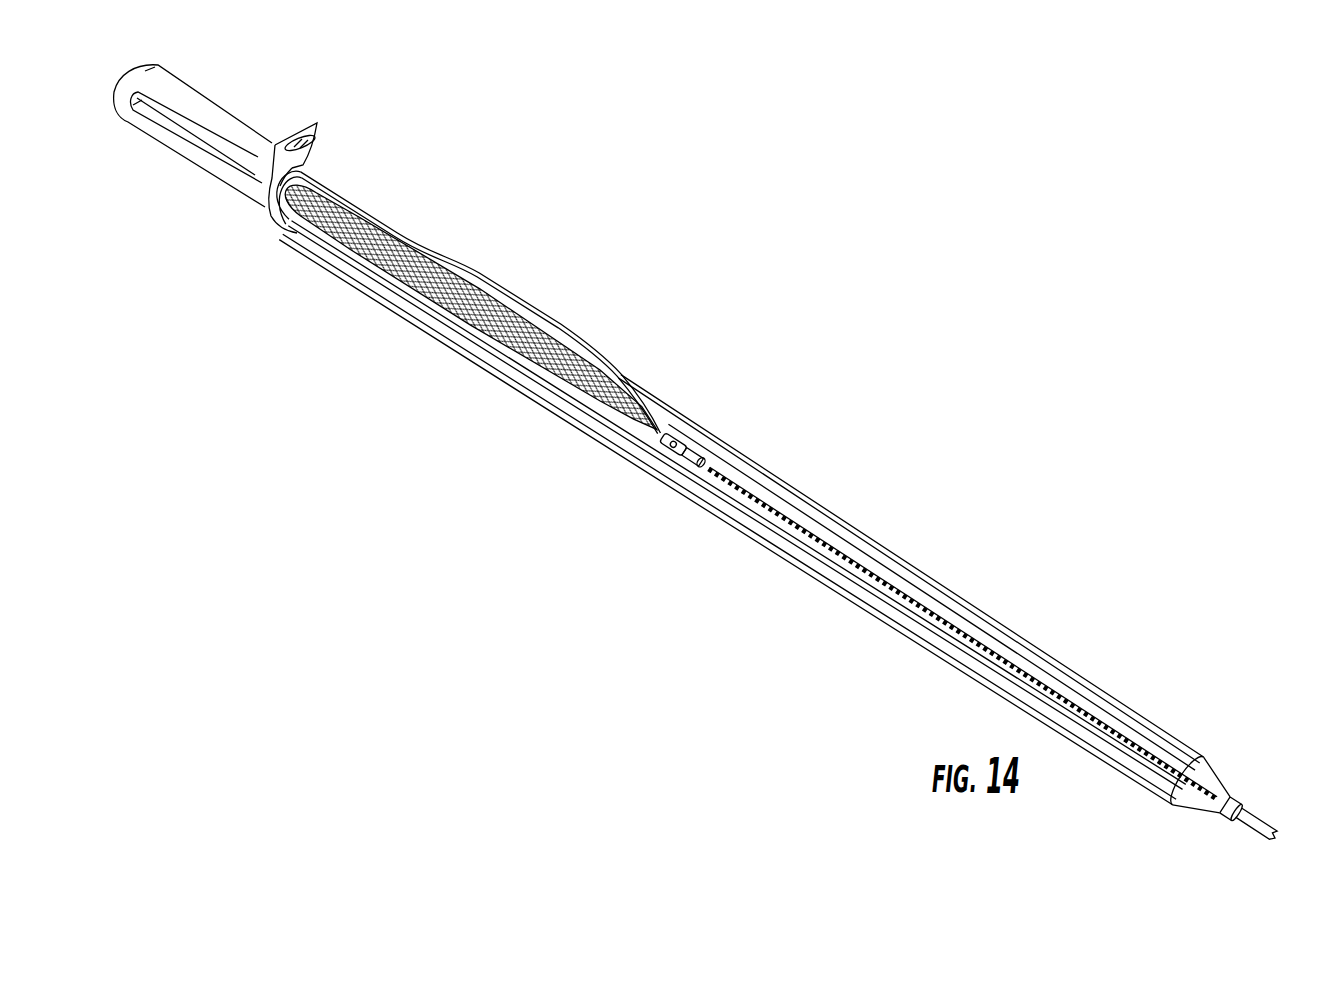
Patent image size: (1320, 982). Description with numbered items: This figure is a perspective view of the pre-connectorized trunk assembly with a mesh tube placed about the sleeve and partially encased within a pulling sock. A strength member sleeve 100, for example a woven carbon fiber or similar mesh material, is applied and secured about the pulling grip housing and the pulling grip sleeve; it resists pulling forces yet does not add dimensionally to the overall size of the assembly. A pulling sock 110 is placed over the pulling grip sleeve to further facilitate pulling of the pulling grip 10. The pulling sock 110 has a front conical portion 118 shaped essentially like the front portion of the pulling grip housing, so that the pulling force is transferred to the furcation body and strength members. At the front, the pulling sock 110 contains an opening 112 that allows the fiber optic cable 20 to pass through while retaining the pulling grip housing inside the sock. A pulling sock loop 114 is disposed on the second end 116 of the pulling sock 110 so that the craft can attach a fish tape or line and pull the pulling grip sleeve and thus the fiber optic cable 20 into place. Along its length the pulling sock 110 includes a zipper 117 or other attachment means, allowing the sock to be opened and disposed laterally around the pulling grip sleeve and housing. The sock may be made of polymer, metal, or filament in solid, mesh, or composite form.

The pulling grip 10 is at (760, 259).
The fiber optic cable 20 is at (1253, 815).
The strength member sleeve 100 is at (462, 303).
The pulling sock 110 is at (560, 338).
The opening 112 is at (1235, 823).
The pulling sock loop 114 is at (249, 134).
The second end 116 is at (265, 204).
The zipper 117 is at (808, 530).
The conical portion 118 is at (1225, 782).